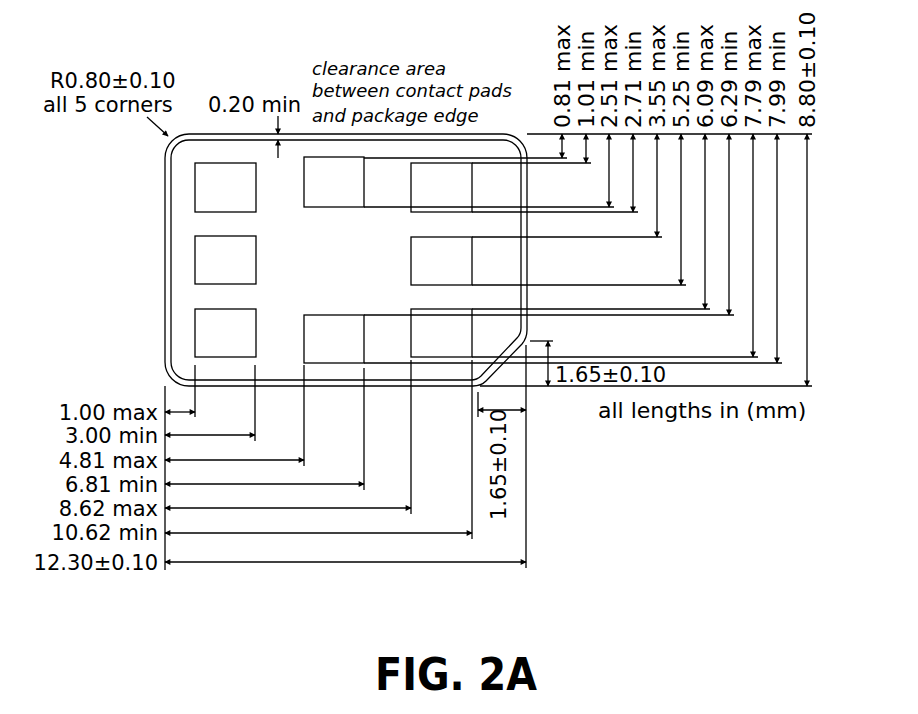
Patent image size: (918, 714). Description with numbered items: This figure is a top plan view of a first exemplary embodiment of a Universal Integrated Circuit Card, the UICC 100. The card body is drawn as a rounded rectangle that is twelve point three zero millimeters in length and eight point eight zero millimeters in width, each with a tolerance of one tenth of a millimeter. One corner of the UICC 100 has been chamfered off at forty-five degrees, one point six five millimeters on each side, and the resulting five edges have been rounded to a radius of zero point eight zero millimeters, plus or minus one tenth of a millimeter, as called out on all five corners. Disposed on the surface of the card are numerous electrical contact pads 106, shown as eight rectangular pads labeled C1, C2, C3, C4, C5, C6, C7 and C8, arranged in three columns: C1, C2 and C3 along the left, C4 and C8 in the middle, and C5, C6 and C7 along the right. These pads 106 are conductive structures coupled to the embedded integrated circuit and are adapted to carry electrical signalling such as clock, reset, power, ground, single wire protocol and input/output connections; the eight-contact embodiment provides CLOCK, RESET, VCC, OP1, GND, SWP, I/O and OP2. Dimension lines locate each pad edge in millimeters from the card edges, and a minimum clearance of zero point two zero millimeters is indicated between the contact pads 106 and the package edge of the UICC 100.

The UICC 100 is at (714, 507).
The electrical contact pads 106 is at (333, 260).
The contact pad C1 is at (225, 187).
The contact pad C2 is at (225, 260).
The contact pad C3 is at (225, 333).
The contact pad C4 is at (334, 182).
The contact pad C5 is at (441, 187).
The contact pad C6 is at (441, 261).
The contact pad C7 is at (441, 333).
The contact pad C8 is at (334, 339).